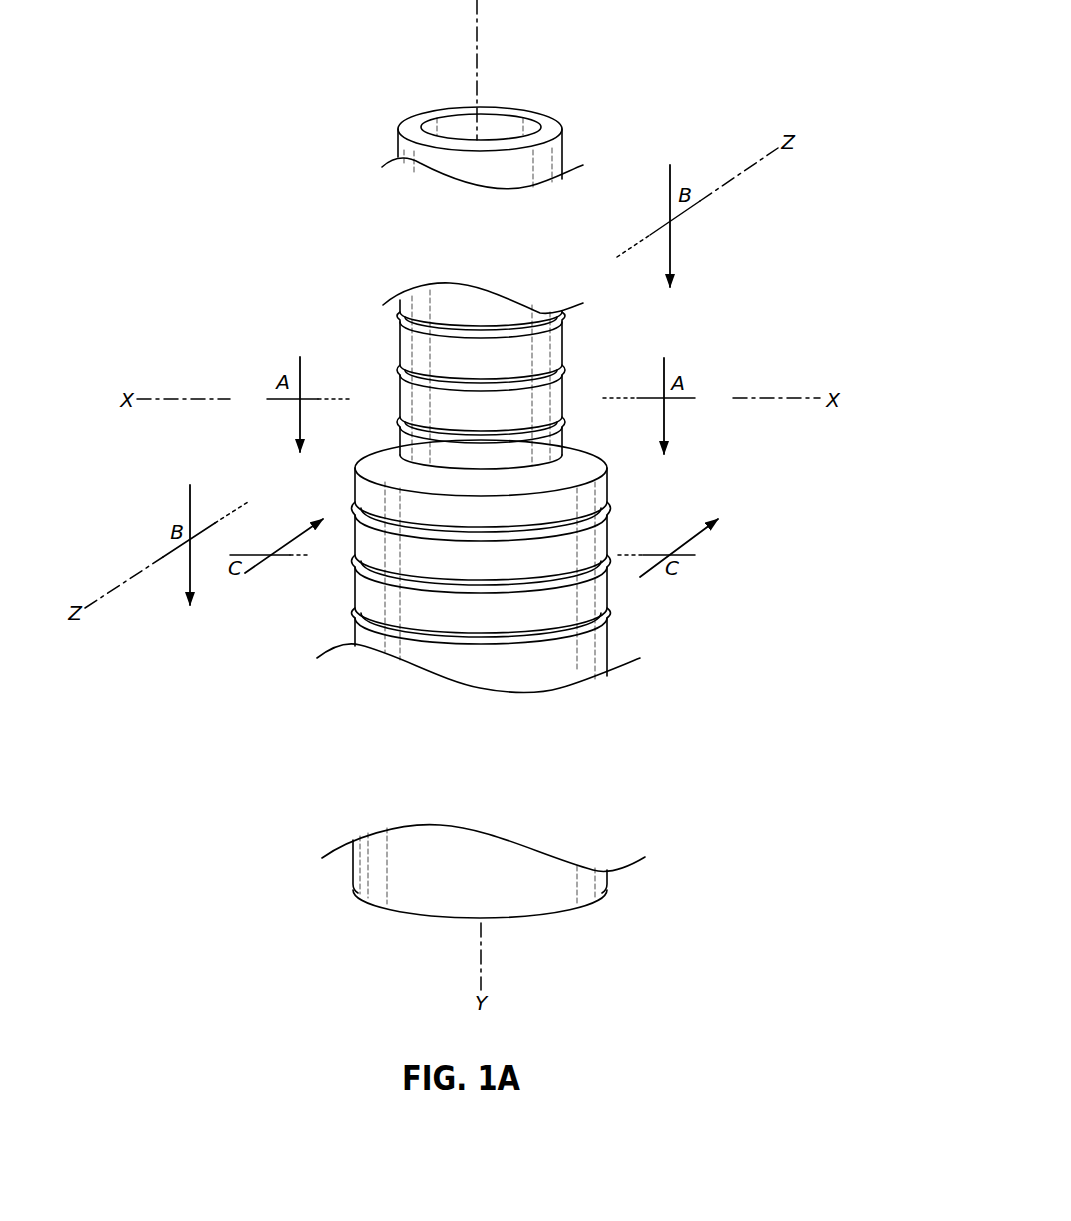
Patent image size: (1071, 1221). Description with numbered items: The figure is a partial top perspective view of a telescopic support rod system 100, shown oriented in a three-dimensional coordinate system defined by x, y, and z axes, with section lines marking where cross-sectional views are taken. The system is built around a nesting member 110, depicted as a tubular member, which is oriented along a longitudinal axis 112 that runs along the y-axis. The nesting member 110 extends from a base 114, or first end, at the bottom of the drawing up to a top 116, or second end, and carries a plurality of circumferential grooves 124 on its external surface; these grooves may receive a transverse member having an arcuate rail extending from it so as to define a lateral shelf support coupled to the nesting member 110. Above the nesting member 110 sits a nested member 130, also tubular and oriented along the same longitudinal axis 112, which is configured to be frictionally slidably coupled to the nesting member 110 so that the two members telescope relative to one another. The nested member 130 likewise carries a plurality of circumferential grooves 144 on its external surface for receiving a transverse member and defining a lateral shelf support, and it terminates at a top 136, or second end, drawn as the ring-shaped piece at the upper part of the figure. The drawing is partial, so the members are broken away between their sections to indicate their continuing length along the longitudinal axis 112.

The telescopic support rod system 100 is at (252, 103).
The longitudinal axis 112 is at (480, 50).
The top 136 is at (557, 80).
The nested member 130 is at (562, 392).
The circumferential grooves 144 is at (398, 316).
The top 116 is at (588, 448).
The nesting member 110 is at (600, 648).
The circumferential grooves 124 is at (355, 505).
The base 114 is at (522, 932).